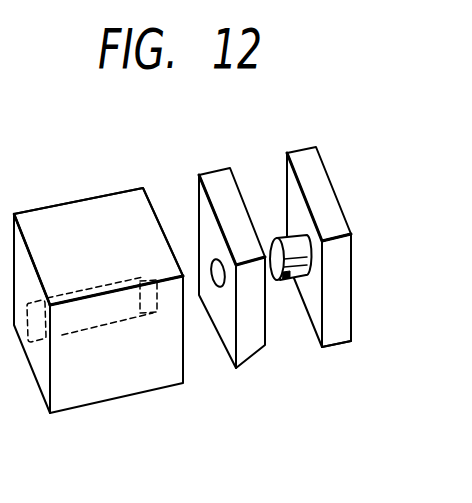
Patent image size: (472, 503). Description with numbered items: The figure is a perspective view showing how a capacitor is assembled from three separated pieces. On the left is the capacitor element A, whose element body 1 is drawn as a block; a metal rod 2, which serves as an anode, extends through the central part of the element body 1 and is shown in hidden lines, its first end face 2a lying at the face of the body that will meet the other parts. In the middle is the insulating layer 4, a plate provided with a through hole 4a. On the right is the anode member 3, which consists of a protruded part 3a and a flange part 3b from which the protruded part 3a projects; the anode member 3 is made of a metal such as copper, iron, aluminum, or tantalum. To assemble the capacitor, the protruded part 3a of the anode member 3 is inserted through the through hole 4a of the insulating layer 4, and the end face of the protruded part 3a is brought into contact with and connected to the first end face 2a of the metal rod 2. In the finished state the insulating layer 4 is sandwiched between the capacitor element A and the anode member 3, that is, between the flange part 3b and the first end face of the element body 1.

The capacitor element A is at (77, 188).
The element body 1 is at (121, 212).
The metal rod 2 is at (85, 322).
The first end face 2a is at (157, 283).
The anode member 3 is at (343, 185).
The protruded part 3a is at (292, 281).
The flange part 3b is at (340, 300).
The insulating layer 4 is at (217, 175).
The through hole 4a is at (216, 286).